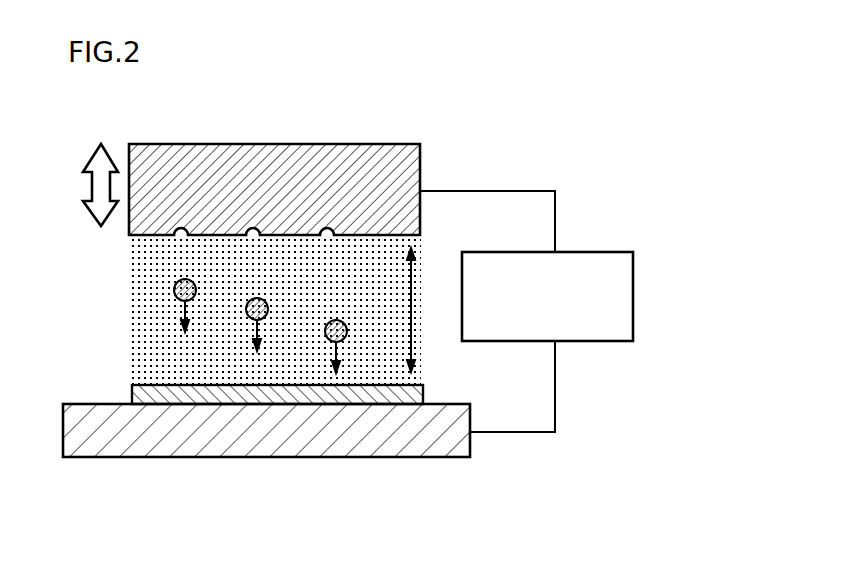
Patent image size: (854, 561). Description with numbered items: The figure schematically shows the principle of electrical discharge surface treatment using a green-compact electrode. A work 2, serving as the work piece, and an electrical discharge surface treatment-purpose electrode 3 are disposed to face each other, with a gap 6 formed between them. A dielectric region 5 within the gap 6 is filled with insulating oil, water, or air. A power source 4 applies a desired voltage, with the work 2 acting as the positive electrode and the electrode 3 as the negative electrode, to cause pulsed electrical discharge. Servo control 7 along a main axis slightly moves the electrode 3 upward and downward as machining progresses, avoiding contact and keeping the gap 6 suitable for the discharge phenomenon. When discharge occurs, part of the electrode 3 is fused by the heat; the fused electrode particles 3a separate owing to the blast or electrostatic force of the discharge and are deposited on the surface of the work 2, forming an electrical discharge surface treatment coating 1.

The electrical discharge surface treatment coating 1 is at (157, 392).
The work 2 is at (282, 457).
The electrical discharge surface treatment-purpose electrode 3 is at (294, 156).
The electrode particles 3a is at (196, 287).
The power source 4 is at (612, 266).
The dielectric region 5 is at (157, 262).
The gap 6 is at (413, 312).
The servo control 7 is at (93, 186).